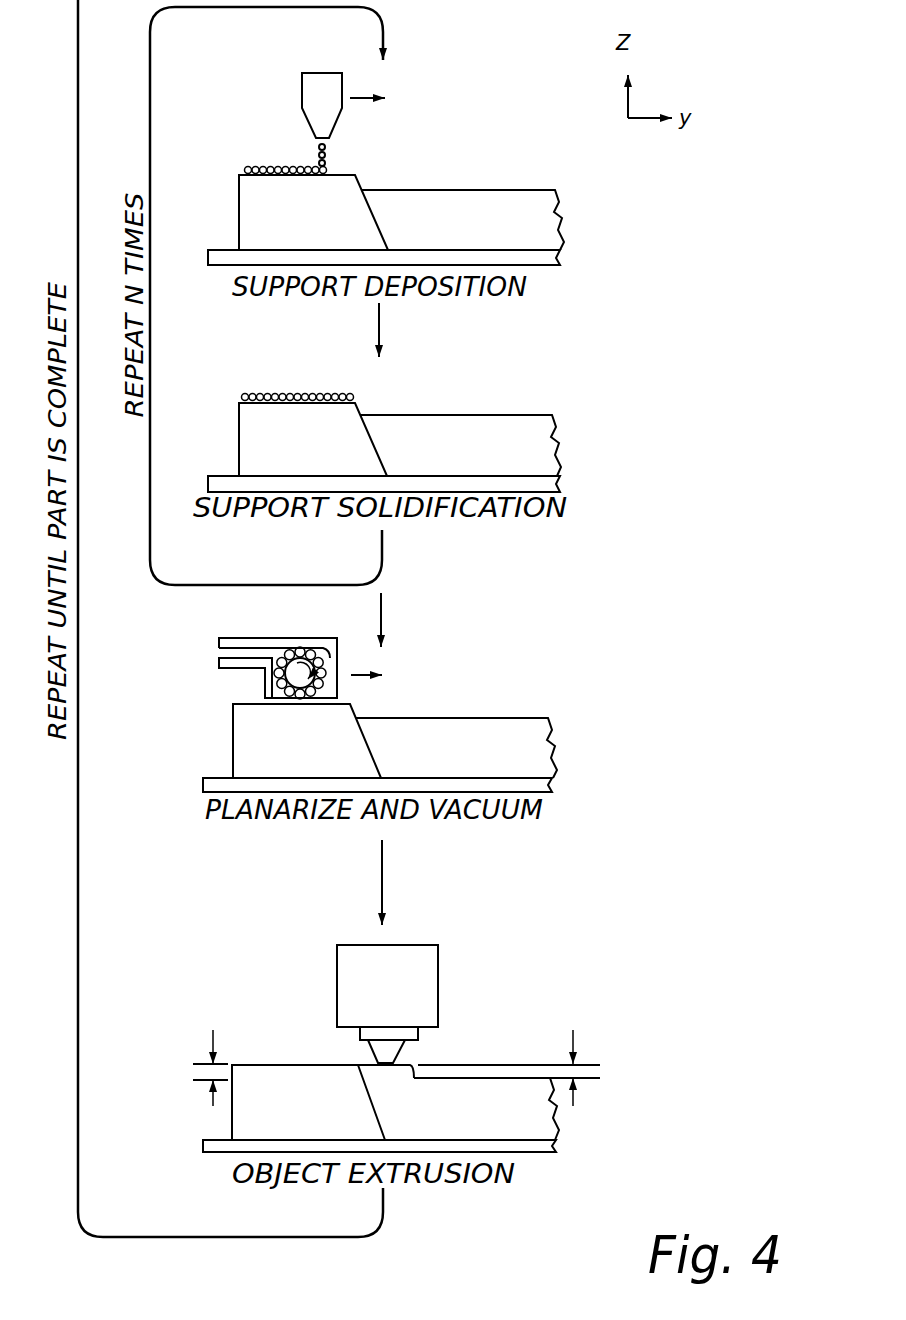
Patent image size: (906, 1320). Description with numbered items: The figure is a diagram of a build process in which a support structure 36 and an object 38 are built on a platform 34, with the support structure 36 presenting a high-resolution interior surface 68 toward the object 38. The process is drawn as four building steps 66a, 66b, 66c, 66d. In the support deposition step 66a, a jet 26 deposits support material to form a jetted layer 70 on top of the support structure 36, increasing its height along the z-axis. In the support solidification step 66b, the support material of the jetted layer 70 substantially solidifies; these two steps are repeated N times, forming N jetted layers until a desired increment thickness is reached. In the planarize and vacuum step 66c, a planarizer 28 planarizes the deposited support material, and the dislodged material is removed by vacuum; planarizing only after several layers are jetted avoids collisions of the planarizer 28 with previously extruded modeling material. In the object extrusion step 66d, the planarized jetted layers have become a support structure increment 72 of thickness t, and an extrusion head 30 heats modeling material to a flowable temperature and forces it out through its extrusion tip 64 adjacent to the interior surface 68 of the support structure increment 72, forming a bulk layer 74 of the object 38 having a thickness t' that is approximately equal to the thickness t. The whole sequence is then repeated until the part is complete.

The jet 26 is at (312, 105).
The planarizer 28 is at (321, 646).
The extrusion head 30 is at (422, 962).
The platform 34 is at (537, 257).
The support structure 36 is at (307, 203).
The object 38 is at (555, 210).
The extrusion tip 64 is at (378, 1050).
The support deposition step 66a is at (645, 213).
The support solidification step 66b is at (607, 418).
The planarize and vacuum step 66c is at (575, 718).
The object extrusion step 66d is at (556, 968).
The interior surface 68 is at (357, 180).
The jetted layer 70 is at (246, 170).
The support structure increment 72 is at (186, 1066).
The bulk layer 74 is at (408, 1064).